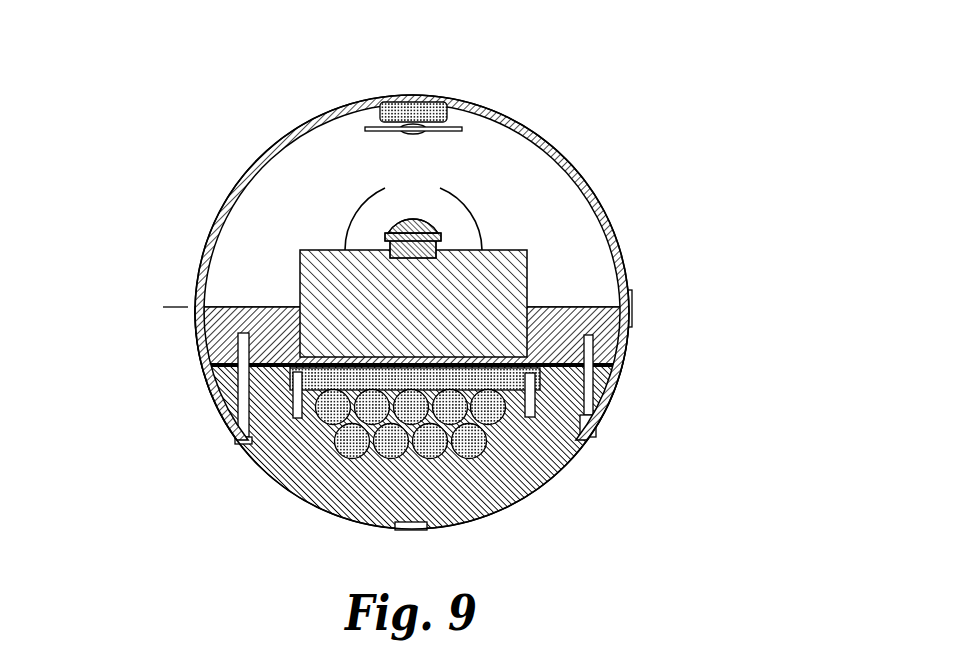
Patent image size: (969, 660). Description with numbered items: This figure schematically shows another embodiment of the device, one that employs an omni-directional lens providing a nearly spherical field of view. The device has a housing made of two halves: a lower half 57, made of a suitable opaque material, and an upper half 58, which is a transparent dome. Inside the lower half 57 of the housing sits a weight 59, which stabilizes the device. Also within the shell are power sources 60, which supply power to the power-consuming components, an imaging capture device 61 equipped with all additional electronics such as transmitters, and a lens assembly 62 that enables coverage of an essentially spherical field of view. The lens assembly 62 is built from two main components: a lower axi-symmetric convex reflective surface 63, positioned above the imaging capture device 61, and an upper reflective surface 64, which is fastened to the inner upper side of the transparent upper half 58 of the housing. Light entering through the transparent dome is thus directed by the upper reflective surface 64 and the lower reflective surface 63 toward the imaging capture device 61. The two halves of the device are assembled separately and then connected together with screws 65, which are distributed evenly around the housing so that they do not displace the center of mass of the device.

The lower half 57 is at (632, 372).
The upper half 58 is at (572, 153).
The weight 59 is at (497, 480).
The power sources 60 is at (373, 427).
The imaging capture device 61 is at (367, 297).
The lens assembly 62 is at (348, 207).
The lower axi-symmetric convex reflective surface 63 is at (478, 207).
The upper reflective surface 64 is at (463, 102).
The screws 65 is at (197, 317).